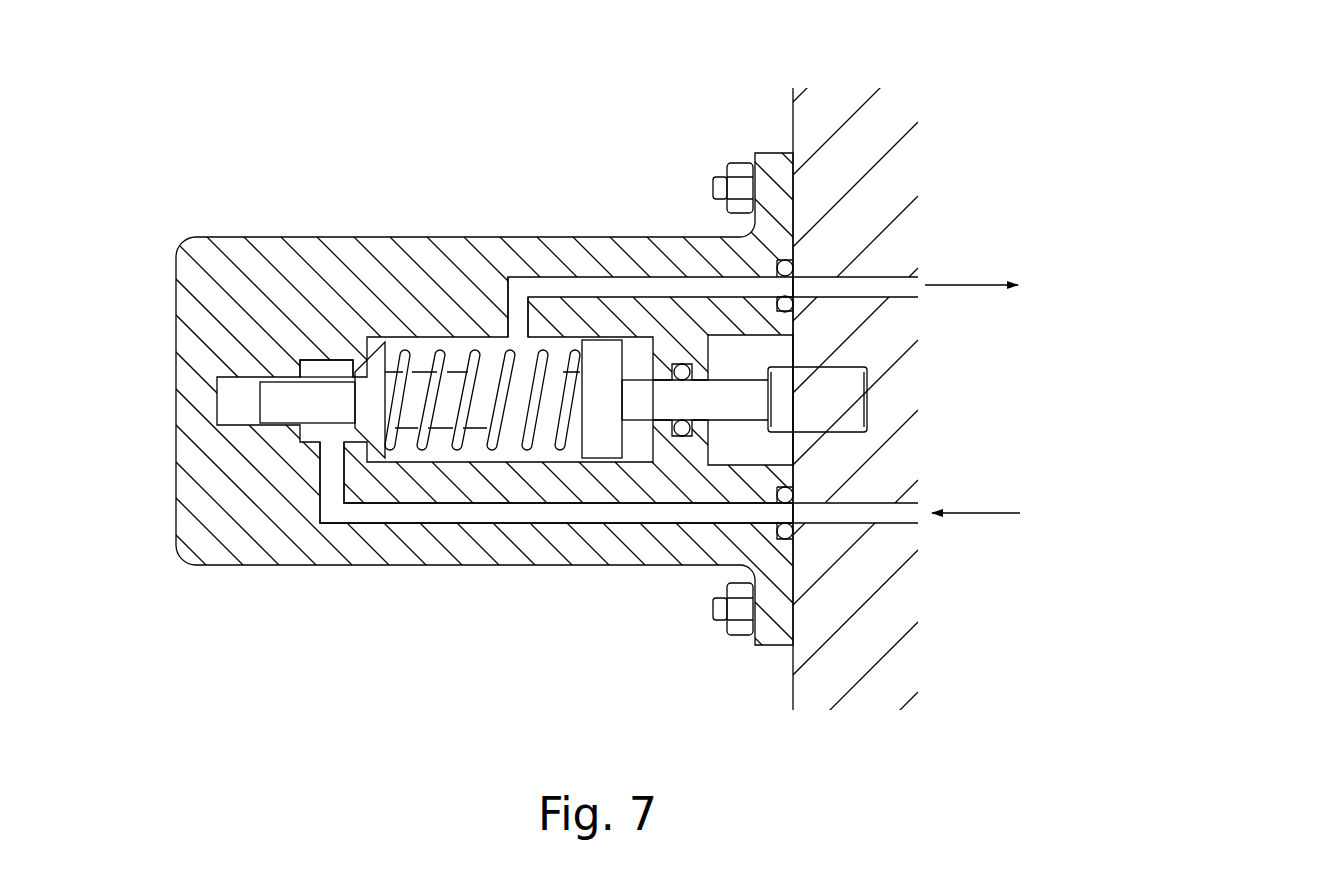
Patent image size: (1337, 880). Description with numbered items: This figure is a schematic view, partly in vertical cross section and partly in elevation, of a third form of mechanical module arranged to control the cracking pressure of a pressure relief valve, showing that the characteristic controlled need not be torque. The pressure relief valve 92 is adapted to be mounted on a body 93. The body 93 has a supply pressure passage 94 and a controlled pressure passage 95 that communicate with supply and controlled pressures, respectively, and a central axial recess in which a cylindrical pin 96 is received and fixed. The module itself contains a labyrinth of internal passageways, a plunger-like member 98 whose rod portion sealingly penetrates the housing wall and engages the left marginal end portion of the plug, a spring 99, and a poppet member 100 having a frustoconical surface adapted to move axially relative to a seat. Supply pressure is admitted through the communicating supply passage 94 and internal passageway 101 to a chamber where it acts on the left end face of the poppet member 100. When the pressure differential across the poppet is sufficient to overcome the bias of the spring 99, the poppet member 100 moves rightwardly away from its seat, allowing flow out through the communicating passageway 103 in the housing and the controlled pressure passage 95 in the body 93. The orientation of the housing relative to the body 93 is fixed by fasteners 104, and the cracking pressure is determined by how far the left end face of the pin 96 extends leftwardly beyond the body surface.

The pressure relief valve 92 is at (347, 148).
The body 93 is at (870, 112).
The supply pressure passage 94 is at (862, 512).
The controlled pressure passage 95 is at (870, 280).
The cylindrical pin 96 is at (862, 393).
The plunger-like member 98 is at (318, 372).
The spring 99 is at (420, 452).
The poppet member 100 is at (278, 414).
The passageway 101 is at (500, 512).
The passageway 103 is at (557, 284).
The fasteners 104 is at (723, 163).